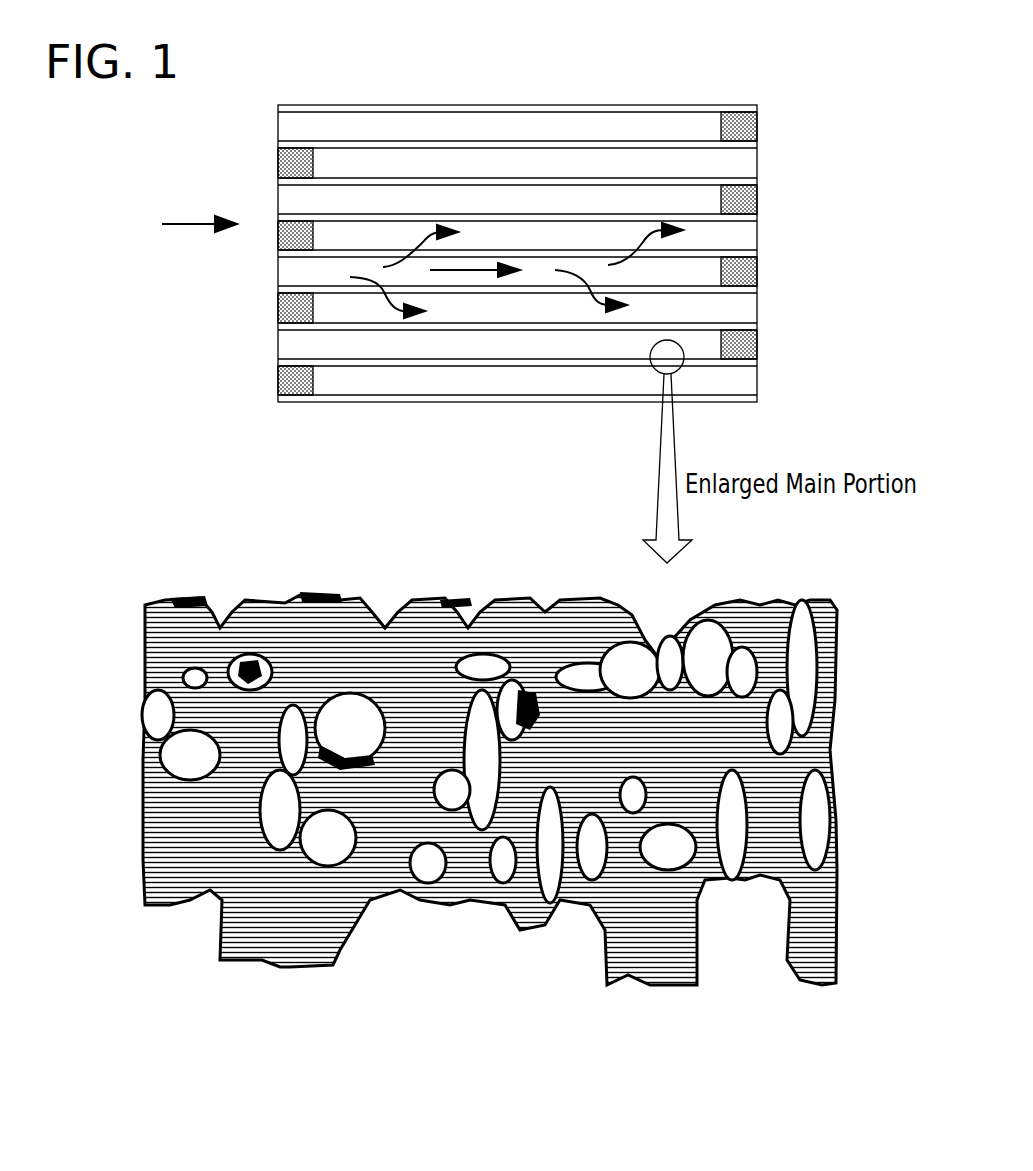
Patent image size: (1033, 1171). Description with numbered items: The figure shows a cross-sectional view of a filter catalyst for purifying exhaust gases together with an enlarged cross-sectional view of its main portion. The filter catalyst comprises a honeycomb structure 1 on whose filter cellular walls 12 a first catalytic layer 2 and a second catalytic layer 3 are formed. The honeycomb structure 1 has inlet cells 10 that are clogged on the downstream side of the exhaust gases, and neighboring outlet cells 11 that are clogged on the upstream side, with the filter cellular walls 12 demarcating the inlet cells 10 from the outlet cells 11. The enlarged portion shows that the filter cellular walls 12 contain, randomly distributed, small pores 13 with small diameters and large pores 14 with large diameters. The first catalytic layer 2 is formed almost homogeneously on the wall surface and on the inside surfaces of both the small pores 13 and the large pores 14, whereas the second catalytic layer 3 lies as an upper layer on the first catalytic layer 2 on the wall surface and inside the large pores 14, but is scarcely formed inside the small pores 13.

The honeycomb structure 1 is at (427, 96).
The inlet cells 10 is at (340, 200).
The outlet cells 11 is at (617, 163).
The filter cellular walls 12 is at (840, 990).
The first catalytic layer 2 is at (580, 605).
The second catalytic layer 3 is at (353, 603).
The small pores 13 is at (578, 765).
The large pores 14 is at (422, 855).